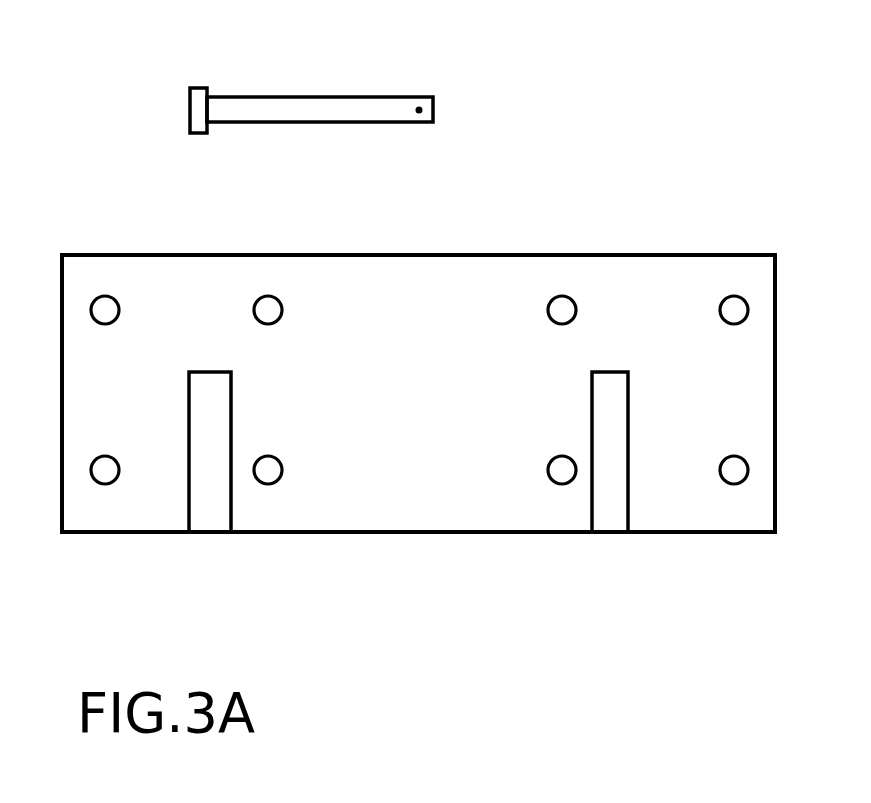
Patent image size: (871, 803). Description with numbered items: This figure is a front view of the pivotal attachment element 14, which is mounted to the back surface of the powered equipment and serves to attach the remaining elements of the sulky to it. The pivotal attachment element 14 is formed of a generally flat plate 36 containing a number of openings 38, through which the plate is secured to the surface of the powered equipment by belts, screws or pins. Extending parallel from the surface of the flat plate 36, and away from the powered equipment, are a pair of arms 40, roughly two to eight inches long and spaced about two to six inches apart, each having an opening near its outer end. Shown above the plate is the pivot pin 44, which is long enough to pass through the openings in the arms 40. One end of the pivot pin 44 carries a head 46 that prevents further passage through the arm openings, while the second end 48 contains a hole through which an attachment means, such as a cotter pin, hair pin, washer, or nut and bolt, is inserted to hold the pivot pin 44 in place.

The pivotal attachment element 14 is at (667, 237).
The flat plate 36 is at (422, 470).
The openings 38 is at (736, 472).
The arms 40 is at (220, 430).
The pivot pin 44 is at (155, 112).
The head 46 is at (200, 125).
The second end 48 is at (432, 110).